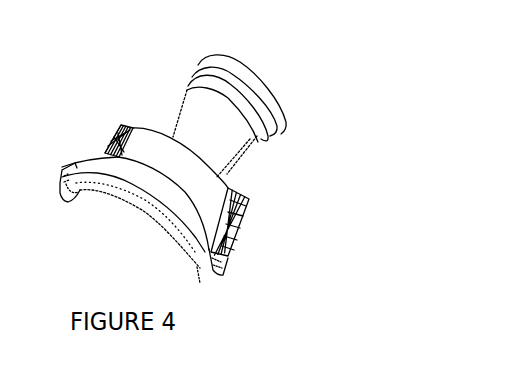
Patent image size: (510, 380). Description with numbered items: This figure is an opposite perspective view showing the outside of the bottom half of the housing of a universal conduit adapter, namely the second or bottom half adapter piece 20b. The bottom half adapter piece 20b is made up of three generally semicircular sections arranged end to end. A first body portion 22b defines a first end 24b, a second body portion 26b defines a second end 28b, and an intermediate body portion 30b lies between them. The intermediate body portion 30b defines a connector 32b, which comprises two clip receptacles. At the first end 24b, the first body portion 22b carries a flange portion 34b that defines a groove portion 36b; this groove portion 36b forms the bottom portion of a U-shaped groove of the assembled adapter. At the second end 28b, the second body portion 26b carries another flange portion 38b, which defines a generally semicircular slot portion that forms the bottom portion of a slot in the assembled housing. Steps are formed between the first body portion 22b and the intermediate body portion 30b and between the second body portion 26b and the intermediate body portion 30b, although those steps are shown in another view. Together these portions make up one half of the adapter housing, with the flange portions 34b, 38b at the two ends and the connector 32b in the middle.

The bottom half adapter piece 20b is at (125, 72).
The first body portion 22b is at (228, 138).
The first end 24b is at (275, 68).
The second body portion 26b is at (157, 190).
The second end 28b is at (105, 238).
The intermediate body portion 30b is at (193, 169).
The connector 32b is at (108, 138).
The flange portion 34b is at (288, 108).
The groove portion 36b is at (285, 142).
The flange portion 38b is at (203, 277).